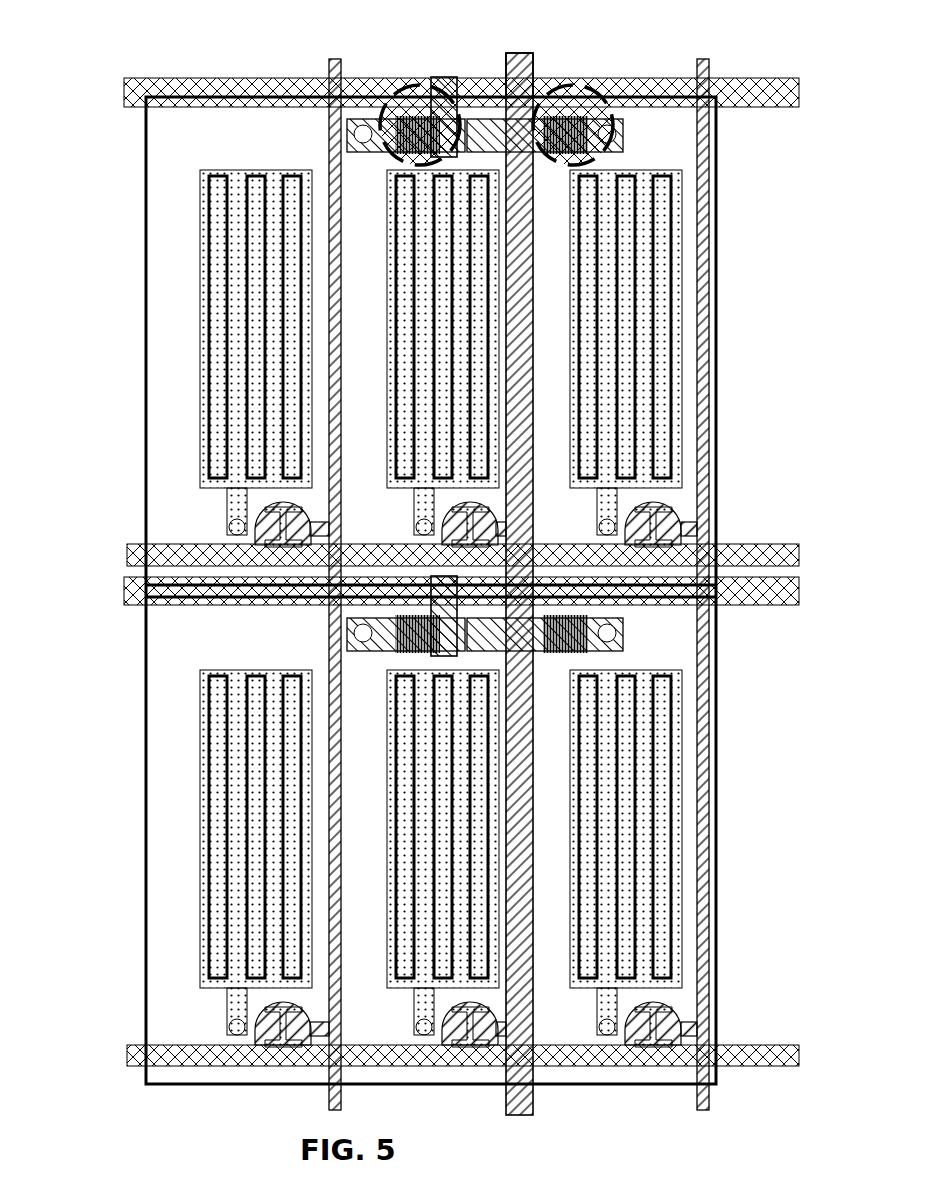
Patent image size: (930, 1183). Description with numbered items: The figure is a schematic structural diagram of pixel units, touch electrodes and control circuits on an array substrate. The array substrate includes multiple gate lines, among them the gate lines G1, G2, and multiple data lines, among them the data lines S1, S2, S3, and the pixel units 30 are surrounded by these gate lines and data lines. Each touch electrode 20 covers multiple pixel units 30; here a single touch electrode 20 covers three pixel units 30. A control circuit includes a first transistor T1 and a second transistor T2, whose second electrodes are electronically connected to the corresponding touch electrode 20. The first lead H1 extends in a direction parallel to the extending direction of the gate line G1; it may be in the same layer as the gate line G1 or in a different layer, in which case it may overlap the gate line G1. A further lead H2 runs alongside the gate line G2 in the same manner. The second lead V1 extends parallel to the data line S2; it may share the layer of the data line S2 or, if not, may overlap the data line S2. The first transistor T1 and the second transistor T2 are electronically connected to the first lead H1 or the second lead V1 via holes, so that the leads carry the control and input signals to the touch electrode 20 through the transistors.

The first lead H1 is at (124, 80).
The gate line G1 is at (128, 545).
The second horizontal common line H2 is at (124, 578).
The second gate line G2 is at (128, 1046).
The first data line S1 is at (338, 60).
The data line S2 is at (508, 53).
The third data line S3 is at (705, 60).
The second lead V1 is at (534, 55).
The first transistor T1 is at (413, 82).
The second transistor T2 is at (557, 80).
The touch electrode 20 is at (715, 170).
The pixel unit 30 is at (682, 260).